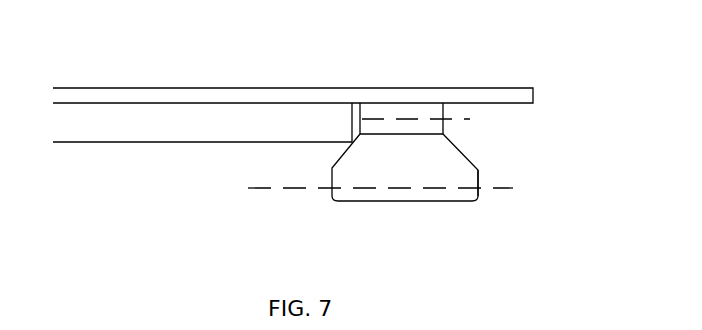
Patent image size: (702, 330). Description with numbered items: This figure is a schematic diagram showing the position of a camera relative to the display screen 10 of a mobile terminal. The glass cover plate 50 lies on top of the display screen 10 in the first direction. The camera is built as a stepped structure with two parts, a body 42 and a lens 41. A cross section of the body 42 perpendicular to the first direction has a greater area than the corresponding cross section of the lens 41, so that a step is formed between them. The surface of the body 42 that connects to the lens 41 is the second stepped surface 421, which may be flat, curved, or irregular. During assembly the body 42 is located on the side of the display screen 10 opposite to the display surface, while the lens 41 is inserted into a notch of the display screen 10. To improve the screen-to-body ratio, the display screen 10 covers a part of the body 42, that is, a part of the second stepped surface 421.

The display screen 10 is at (161, 127).
The glass cover plate 50 is at (251, 98).
The lens 41 is at (394, 109).
The body 42 is at (468, 193).
The second stepped surface 421 is at (478, 170).